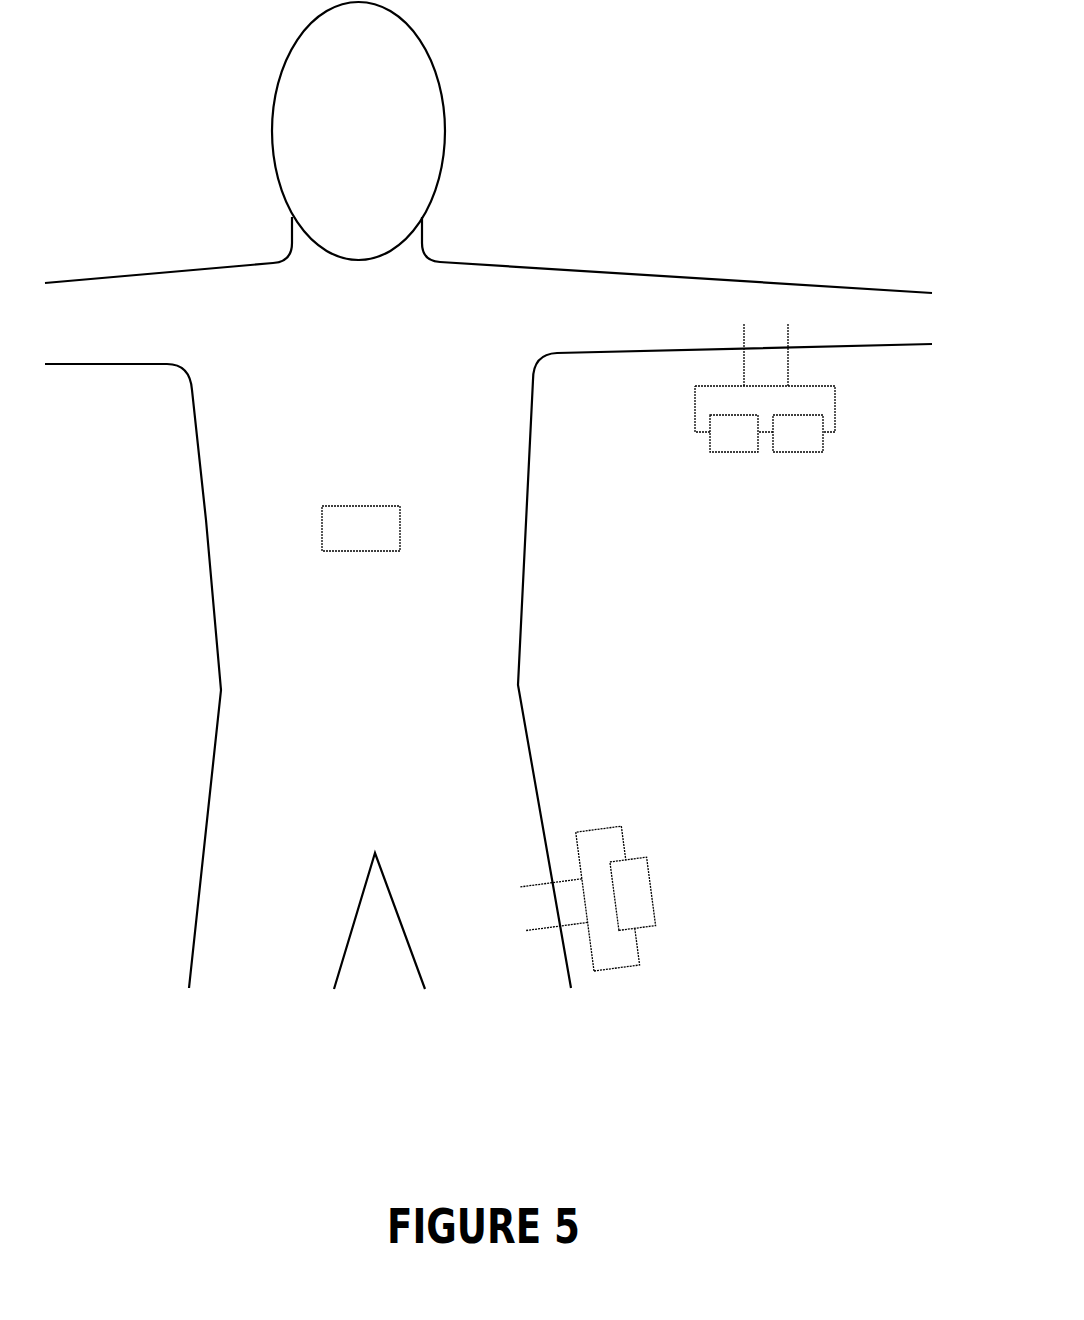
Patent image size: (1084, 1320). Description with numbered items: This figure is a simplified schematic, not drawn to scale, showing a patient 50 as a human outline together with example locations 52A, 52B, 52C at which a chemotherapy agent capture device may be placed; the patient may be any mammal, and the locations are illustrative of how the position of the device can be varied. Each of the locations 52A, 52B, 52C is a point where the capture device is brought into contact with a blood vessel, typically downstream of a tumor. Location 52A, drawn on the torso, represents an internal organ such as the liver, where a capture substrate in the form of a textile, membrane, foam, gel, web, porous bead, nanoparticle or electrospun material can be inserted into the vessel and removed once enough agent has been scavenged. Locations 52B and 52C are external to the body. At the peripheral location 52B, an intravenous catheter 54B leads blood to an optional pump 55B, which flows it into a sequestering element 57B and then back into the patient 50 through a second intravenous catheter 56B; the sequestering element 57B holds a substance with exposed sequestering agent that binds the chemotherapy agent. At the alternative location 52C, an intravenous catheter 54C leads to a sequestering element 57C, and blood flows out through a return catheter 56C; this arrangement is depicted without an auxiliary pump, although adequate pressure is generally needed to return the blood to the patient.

The patient 50 is at (590, 232).
The location 52A is at (322, 532).
The location 52B is at (775, 431).
The location 52C is at (654, 898).
The intravenous catheter 54B is at (695, 402).
The intravenous catheter 54C is at (595, 828).
The optional pump 55B is at (740, 436).
The intravenous catheter 56B is at (835, 405).
The return catheter 56C is at (615, 971).
The sequestering element 57B is at (807, 437).
The sequestering element 57C is at (643, 913).